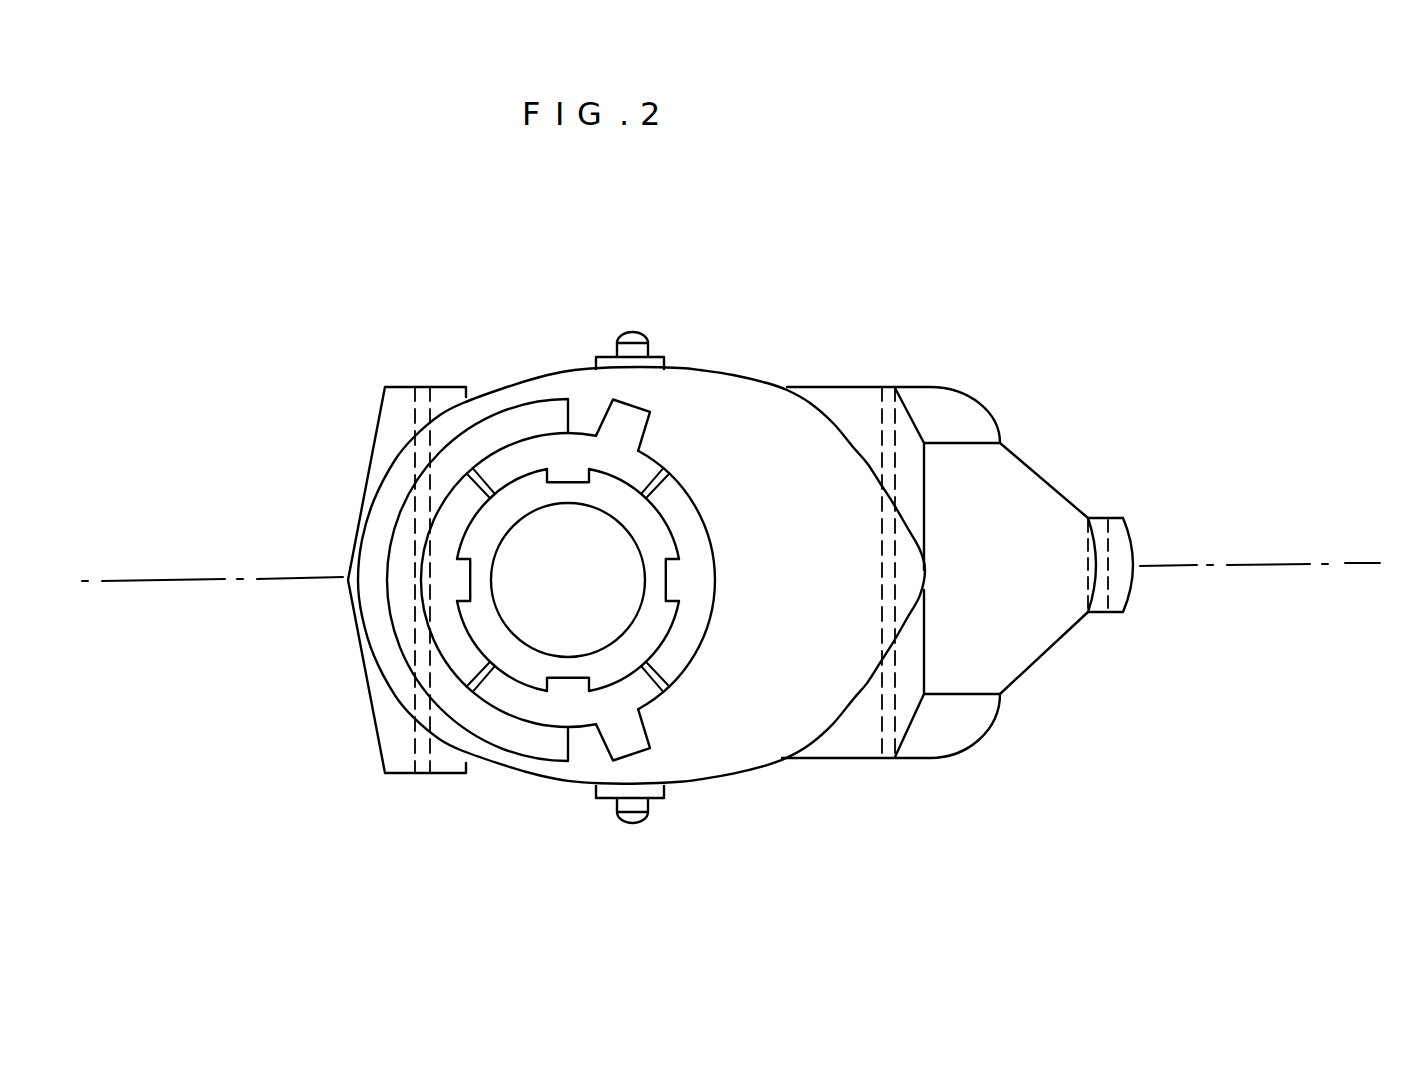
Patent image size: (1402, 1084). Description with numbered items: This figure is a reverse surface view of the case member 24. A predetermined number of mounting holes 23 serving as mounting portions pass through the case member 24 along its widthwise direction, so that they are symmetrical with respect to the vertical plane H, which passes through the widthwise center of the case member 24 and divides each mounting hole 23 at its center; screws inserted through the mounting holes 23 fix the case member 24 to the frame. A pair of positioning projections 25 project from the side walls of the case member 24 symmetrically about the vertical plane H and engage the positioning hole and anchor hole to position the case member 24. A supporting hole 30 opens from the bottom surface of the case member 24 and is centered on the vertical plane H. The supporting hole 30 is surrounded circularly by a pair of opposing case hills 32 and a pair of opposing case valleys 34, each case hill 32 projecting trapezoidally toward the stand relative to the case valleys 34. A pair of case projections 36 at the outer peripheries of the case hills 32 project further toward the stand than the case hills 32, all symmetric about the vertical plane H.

The case member 24 is at (690, 260).
The positioning projection 25 is at (628, 330).
The mounting hole 23 is at (418, 385).
The case hill 32 is at (535, 452).
The case valley 34 is at (437, 556).
The case projection 36 is at (592, 408).
The supporting hole 30 is at (612, 583).
The vertical plane H is at (1272, 562).